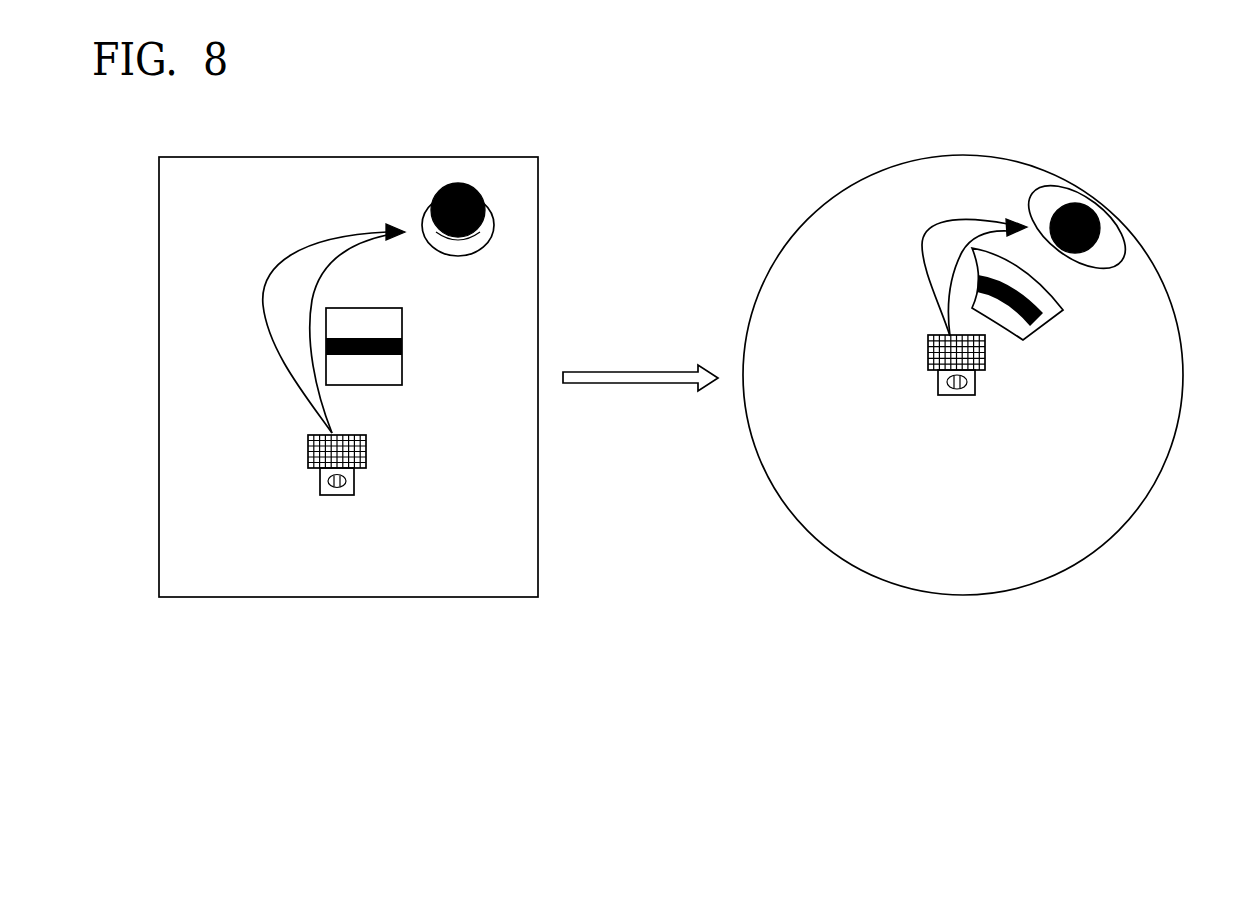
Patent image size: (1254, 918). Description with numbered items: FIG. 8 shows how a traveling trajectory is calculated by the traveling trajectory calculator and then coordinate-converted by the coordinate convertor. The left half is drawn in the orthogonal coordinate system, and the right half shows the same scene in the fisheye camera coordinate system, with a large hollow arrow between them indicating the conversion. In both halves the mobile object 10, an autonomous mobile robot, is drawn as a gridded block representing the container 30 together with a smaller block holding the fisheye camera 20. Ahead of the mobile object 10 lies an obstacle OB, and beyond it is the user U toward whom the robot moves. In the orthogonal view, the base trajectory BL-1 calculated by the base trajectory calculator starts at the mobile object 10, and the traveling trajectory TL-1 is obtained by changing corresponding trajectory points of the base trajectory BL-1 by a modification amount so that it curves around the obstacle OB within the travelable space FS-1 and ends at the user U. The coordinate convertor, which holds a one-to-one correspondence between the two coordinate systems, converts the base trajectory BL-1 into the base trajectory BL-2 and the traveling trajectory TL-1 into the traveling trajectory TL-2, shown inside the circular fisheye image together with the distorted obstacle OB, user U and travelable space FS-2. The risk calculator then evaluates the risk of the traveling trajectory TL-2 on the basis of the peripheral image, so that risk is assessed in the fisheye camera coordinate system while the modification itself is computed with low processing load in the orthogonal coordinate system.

The mobile object 10 is at (335, 497).
The fisheye camera 20 is at (348, 483).
The container 30 is at (308, 450).
The user U is at (497, 220).
The obstacle OB is at (402, 323).
The traveling trajectory in the orthogonal coordinate system TL-1 is at (363, 230).
The traveling trajectory in the fisheye camera coordinate system TL-2 is at (967, 215).
The base trajectory in the orthogonal coordinate system BL-1 is at (325, 427).
The base trajectory in the fisheye camera coordinate system BL-2 is at (950, 308).
The travelable space in the orthogonal coordinate system FS-1 is at (517, 265).
The travelable space in the fisheye camera coordinate system FS-2 is at (1127, 278).